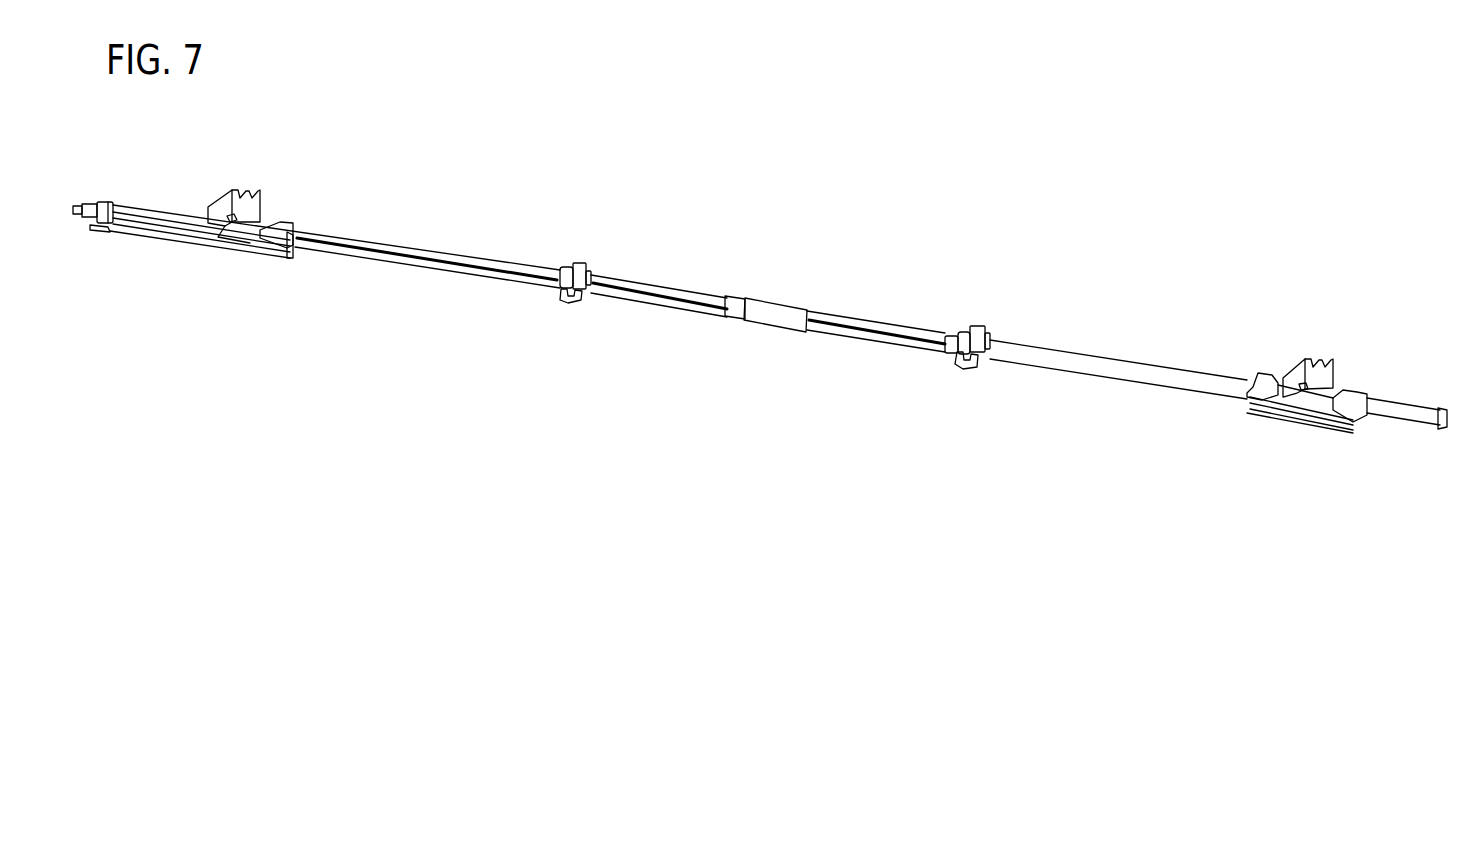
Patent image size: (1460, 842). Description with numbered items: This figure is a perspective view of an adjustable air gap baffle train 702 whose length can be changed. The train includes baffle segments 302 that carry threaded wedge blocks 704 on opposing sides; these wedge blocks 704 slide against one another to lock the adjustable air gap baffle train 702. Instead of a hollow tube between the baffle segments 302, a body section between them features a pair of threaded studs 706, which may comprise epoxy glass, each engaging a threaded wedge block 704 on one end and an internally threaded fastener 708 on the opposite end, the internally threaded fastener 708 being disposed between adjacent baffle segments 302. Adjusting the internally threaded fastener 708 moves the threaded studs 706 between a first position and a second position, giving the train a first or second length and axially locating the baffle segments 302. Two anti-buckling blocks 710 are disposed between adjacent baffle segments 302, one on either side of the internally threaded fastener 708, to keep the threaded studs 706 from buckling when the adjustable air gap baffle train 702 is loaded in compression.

The adjustable air gap baffle train 702 is at (897, 205).
The baffle segments 302 is at (223, 207).
The threaded wedge blocks 704 is at (267, 259).
The threaded studs 706 is at (651, 286).
The internally threaded fastener 708 is at (777, 305).
The anti-buckling blocks 710 is at (565, 304).